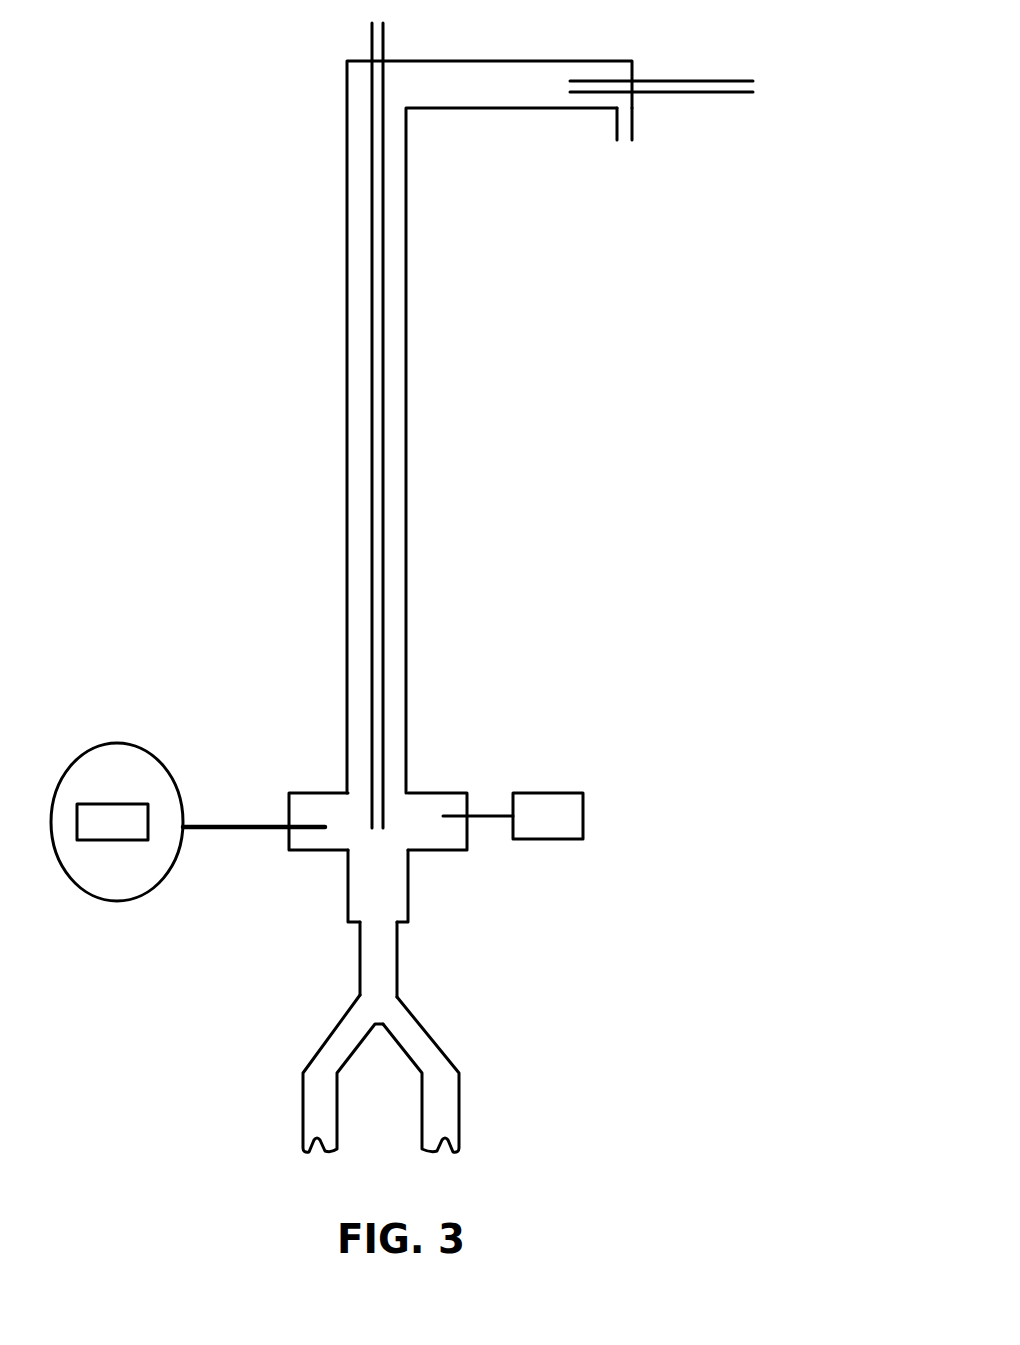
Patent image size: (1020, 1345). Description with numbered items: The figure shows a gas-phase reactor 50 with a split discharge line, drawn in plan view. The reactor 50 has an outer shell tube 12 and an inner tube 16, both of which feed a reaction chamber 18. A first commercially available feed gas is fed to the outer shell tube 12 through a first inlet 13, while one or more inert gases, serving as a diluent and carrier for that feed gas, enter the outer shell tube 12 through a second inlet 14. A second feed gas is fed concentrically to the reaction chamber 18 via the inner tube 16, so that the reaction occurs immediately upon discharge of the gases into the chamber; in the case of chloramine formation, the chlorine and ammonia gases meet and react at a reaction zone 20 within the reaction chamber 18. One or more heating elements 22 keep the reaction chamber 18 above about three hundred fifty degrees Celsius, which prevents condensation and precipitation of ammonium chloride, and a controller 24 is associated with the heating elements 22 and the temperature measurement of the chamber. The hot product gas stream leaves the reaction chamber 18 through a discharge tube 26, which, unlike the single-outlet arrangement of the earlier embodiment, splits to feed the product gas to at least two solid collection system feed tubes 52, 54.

The reactor 50 is at (211, 89).
The outer shell tube 12 is at (450, 108).
The first inlet 13 is at (725, 80).
The second inlet 14 is at (633, 125).
The inner tube 16 is at (385, 42).
The reaction chamber 18 is at (410, 853).
The reaction zone 20 is at (373, 870).
The heating elements 22 is at (567, 808).
The controller 24 is at (123, 738).
The discharge tube 26 is at (387, 953).
The solid collection system feed tube 52 is at (300, 1103).
The solid collection system feed tube 54 is at (460, 1108).